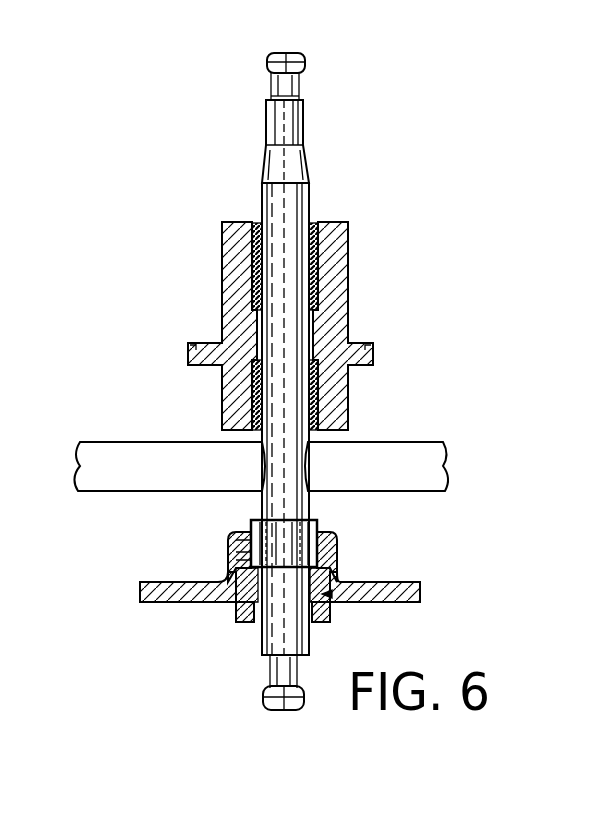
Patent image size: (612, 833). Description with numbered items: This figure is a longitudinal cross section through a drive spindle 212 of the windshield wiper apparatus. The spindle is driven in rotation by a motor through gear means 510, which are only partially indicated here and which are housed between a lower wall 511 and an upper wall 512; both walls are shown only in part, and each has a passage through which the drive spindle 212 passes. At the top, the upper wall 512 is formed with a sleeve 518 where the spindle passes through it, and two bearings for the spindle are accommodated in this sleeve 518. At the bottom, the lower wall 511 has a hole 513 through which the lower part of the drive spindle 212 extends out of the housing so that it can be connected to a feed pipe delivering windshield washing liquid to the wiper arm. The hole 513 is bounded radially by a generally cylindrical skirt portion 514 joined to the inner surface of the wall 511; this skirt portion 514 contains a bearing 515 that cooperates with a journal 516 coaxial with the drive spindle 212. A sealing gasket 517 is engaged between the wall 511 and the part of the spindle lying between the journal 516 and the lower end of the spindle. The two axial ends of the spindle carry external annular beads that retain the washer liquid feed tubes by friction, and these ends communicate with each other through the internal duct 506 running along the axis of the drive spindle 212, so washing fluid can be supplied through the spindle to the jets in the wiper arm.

The drive spindle 212 is at (265, 155).
The duct 506 is at (280, 210).
The sleeve 518 is at (340, 250).
The upper wall 512 is at (206, 350).
The gear means 510 is at (176, 452).
The bearing 515 is at (247, 532).
The journal 516 is at (317, 528).
The skirt portion 514 is at (337, 547).
The lower wall 511 is at (200, 596).
The hole 513 is at (345, 598).
The sealing gasket 517 is at (248, 622).